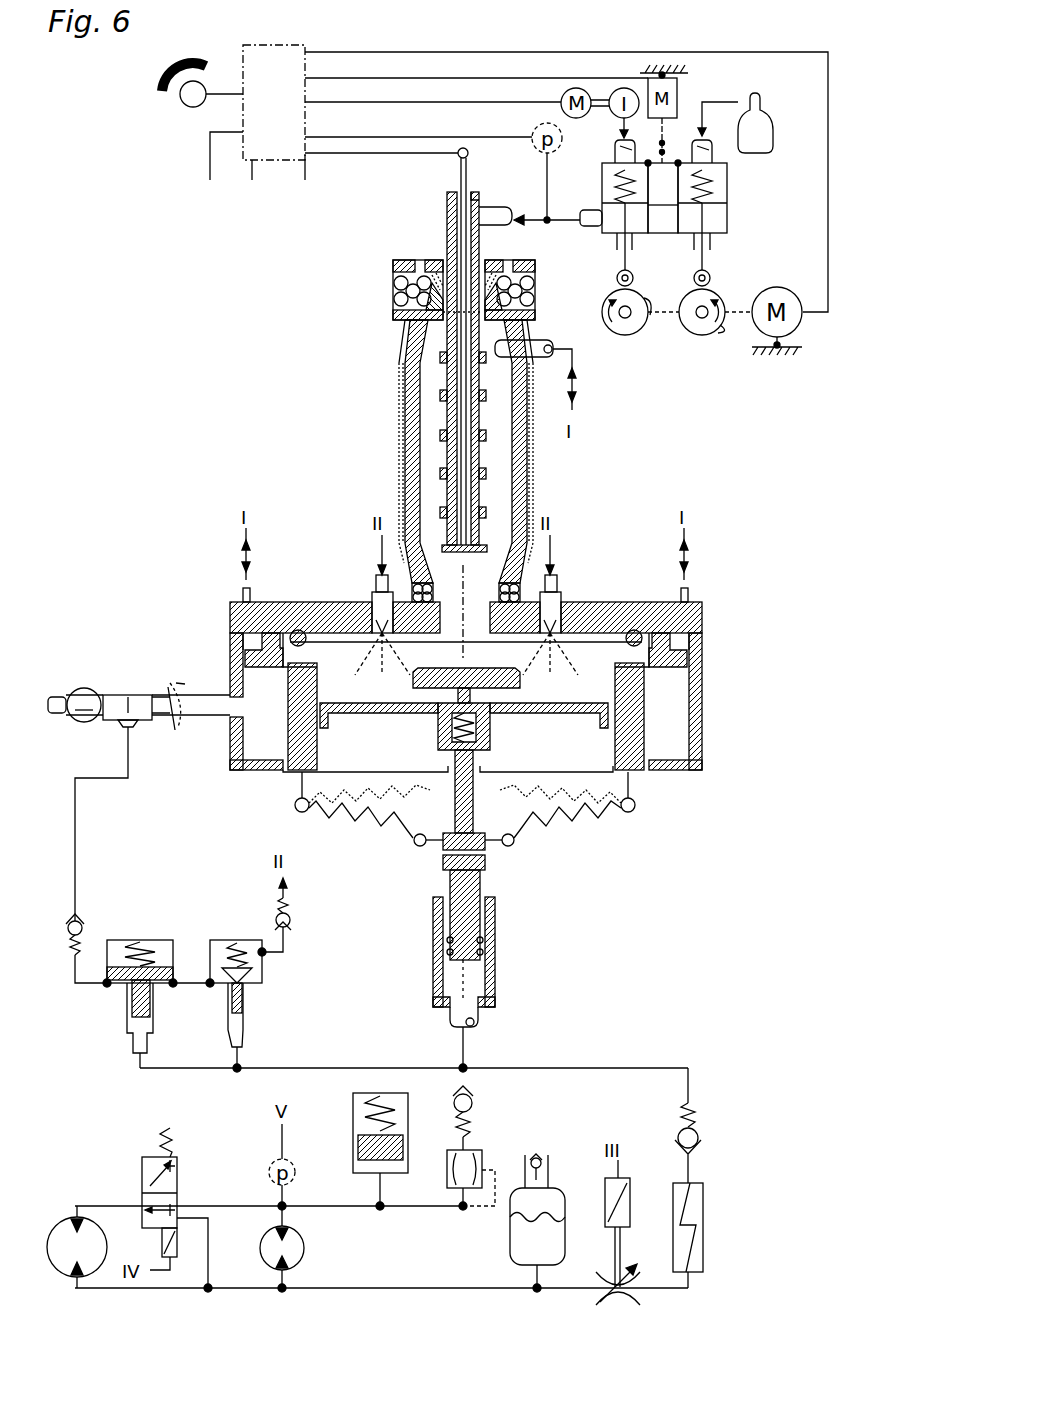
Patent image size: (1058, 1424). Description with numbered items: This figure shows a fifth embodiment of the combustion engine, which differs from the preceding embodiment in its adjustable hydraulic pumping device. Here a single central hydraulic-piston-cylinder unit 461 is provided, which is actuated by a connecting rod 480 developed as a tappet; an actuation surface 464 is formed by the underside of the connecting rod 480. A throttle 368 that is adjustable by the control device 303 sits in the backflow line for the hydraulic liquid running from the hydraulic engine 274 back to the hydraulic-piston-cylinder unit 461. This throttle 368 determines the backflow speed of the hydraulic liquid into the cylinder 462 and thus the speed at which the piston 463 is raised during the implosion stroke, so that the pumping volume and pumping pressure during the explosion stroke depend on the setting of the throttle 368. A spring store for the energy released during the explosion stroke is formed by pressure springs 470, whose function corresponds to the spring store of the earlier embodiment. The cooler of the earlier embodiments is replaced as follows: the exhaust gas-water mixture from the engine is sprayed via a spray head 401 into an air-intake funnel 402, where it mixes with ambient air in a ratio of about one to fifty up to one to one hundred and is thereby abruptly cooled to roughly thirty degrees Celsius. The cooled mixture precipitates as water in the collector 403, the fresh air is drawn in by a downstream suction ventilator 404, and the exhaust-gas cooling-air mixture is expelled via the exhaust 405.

The control device 303 is at (275, 103).
The spray head 401 is at (188, 703).
The air-intake funnel 402 is at (168, 693).
The collector 403 is at (137, 707).
The suction ventilator 404 is at (90, 697).
The exhaust 405 is at (56, 697).
The pressure springs 470 is at (473, 808).
The connecting rod 480 is at (600, 826).
The actuation surface 464 is at (485, 852).
The piston 463 is at (497, 915).
The hydraulic-piston-cylinder unit 461 is at (504, 963).
The cylinder 462 is at (497, 998).
The hydraulic engine 274 is at (292, 1246).
The throttle 368 is at (618, 1295).